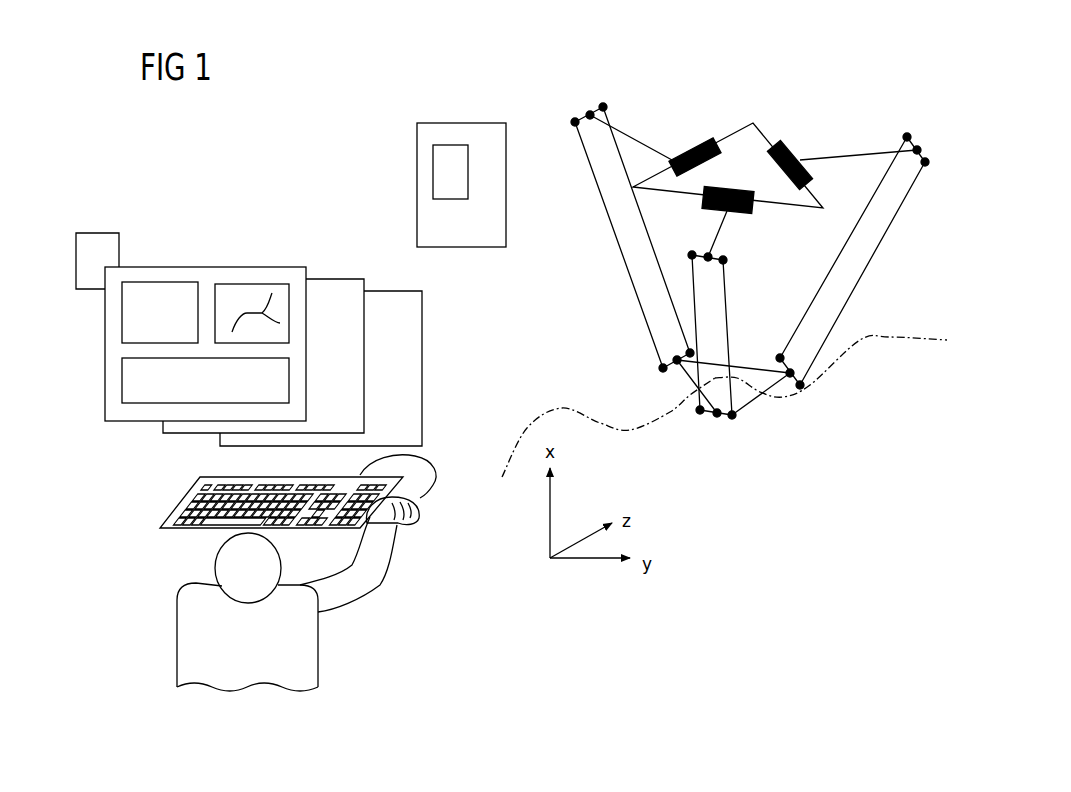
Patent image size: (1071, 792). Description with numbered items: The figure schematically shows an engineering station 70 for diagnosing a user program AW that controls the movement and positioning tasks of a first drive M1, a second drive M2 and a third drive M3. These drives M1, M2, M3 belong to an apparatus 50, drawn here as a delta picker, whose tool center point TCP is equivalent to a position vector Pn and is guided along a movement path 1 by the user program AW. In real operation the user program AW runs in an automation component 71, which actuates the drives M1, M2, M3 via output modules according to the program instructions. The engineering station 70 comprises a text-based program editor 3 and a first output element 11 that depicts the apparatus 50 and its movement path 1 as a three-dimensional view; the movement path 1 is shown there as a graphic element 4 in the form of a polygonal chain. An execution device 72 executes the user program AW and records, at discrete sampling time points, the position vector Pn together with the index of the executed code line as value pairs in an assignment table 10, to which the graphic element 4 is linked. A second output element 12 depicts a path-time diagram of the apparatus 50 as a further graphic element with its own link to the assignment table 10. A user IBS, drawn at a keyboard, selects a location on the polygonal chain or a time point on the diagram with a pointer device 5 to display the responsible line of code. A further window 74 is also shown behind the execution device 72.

The movement path 1 is at (527, 427).
The text-based program editor 3 is at (122, 325).
The graphic element 4 is at (280, 323).
The pointer device 5 is at (423, 502).
The assignment table 10 is at (76, 255).
The first output element 11 is at (247, 284).
The second output element 12 is at (122, 383).
The apparatus 50 is at (905, 347).
The engineering station 70 is at (178, 257).
The automation component 71 is at (417, 141).
The execution device 72 is at (364, 352).
The further window 74 is at (422, 383).
The first drive M1 is at (703, 140).
The second drive M2 is at (793, 152).
The third drive M3 is at (742, 213).
The user program AW is at (433, 179).
The position vector Pn is at (675, 392).
The tool center point TCP is at (740, 385).
The user IBS is at (187, 625).